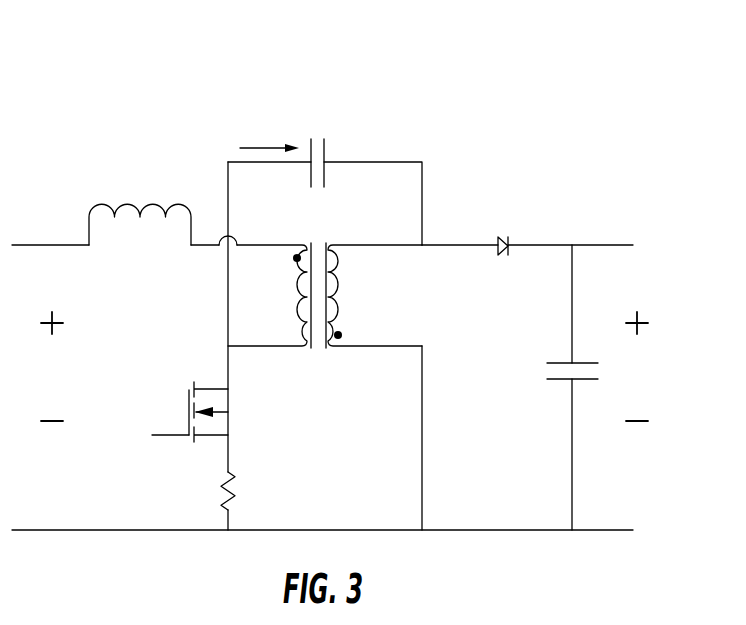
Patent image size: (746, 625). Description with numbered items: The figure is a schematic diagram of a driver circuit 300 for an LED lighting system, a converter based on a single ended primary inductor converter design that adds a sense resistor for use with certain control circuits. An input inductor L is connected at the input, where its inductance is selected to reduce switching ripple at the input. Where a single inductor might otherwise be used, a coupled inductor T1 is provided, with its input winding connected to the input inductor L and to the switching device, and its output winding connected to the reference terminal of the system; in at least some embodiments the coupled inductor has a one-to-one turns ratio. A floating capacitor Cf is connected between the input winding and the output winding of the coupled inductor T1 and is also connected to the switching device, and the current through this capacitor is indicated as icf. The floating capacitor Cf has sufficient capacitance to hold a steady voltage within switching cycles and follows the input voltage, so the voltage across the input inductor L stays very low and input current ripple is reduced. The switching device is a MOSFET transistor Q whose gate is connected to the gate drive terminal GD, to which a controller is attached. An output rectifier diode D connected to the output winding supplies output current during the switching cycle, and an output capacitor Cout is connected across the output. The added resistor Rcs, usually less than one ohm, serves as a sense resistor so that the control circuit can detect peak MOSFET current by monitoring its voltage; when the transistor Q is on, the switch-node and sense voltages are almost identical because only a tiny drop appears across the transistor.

The driver circuit 300 is at (640, 96).
The input inductor L is at (140, 201).
The floating capacitor Cf is at (336, 154).
The floating capacitor current icf is at (269, 131).
The coupled inductor T1 is at (325, 313).
The output rectifier diode D is at (505, 229).
The output capacitor Cout is at (546, 370).
The transistor Q is at (222, 412).
The gate drive terminal GD is at (154, 435).
The sense resistor Rcs is at (247, 491).